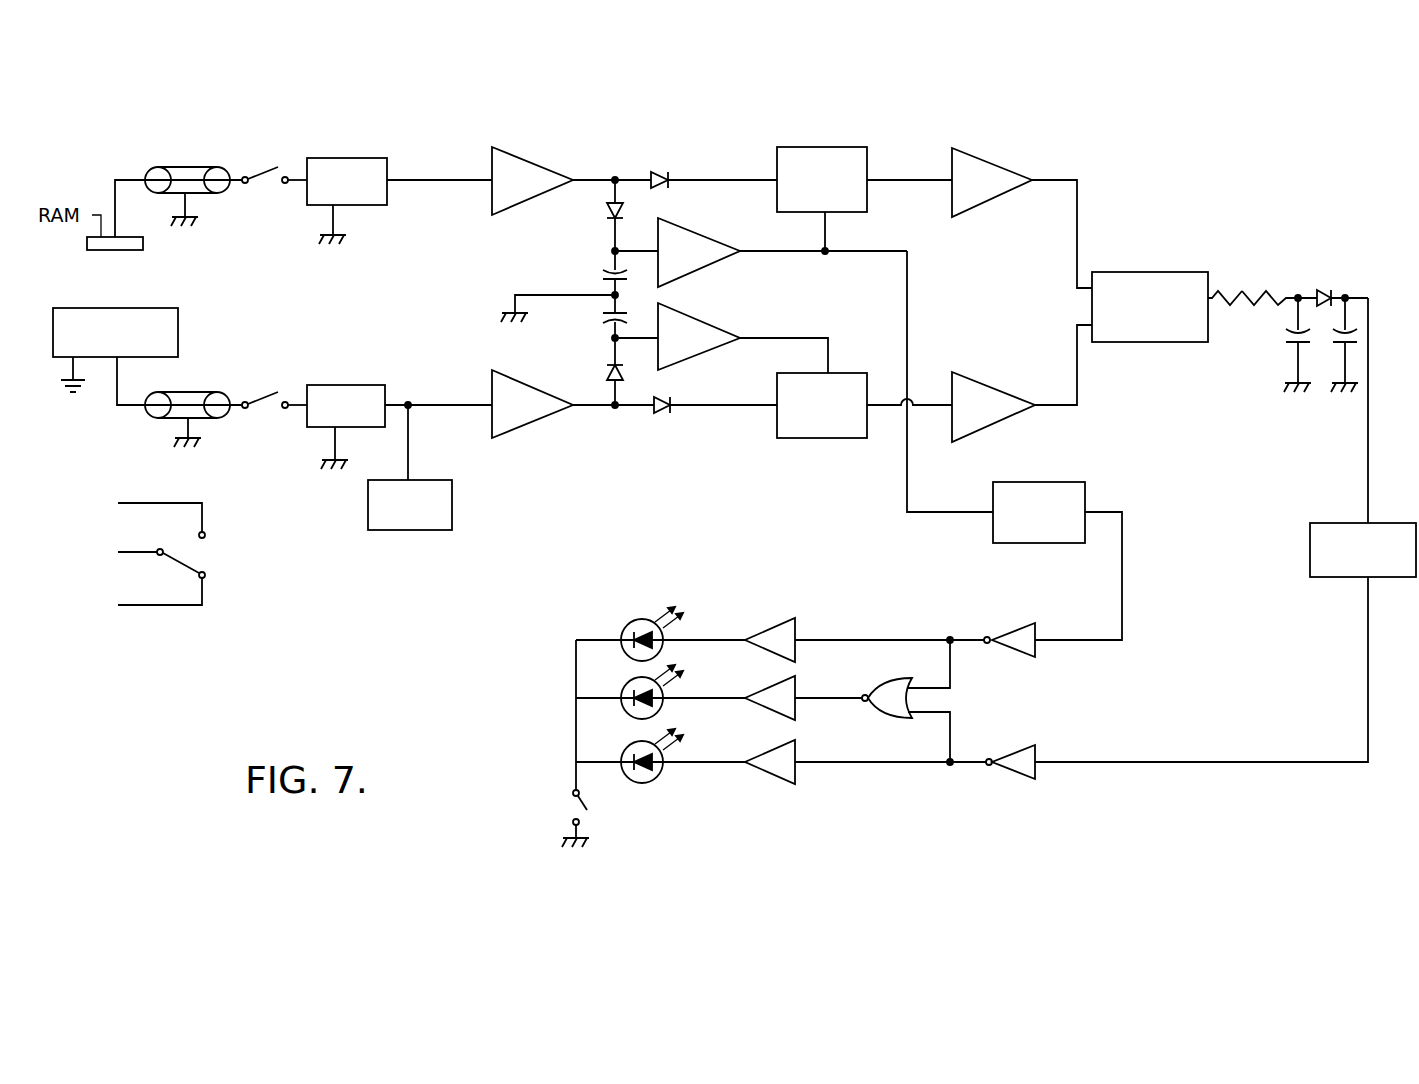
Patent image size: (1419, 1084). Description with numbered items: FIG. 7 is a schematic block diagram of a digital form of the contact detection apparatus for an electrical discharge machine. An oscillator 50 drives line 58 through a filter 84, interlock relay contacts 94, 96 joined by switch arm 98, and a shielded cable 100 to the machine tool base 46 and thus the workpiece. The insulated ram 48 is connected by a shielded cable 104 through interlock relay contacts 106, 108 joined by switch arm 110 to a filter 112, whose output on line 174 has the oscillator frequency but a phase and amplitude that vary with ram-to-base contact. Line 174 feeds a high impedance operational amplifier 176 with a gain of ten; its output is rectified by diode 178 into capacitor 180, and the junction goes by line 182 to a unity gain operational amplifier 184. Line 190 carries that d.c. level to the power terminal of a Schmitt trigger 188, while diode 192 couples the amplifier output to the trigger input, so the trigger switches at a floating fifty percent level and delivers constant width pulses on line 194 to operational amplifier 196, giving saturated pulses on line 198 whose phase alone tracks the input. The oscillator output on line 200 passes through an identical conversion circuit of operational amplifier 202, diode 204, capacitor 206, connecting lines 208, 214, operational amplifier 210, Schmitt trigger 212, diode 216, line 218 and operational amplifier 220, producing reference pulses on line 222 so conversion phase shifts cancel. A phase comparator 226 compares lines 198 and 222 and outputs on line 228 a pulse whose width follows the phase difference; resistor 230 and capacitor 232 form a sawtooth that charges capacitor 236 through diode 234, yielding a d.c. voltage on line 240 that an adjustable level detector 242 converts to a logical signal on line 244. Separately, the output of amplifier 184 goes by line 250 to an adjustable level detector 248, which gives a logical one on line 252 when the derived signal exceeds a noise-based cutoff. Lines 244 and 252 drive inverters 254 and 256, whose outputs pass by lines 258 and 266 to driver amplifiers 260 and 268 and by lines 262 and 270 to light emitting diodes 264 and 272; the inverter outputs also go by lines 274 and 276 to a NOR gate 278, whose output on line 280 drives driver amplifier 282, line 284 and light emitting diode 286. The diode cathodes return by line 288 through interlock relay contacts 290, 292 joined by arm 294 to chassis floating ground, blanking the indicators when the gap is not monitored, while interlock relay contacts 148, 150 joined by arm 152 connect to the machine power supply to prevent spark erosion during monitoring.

The machine tool base 46 is at (107, 308).
The machine tool ram 48 is at (143, 243).
The oscillator 50 is at (452, 510).
The oscillator output line 58 is at (413, 440).
The filter 84 is at (356, 385).
The interlock relay contact 94 is at (287, 400).
The interlock relay contact 96 is at (243, 409).
The switch arm 98 is at (265, 396).
The shielded cable 100 is at (165, 418).
The shielded cable 104 is at (193, 175).
The interlock relay contact 106 is at (243, 184).
The interlock relay contact 108 is at (286, 177).
The switch arm 110 is at (264, 167).
The filter 112 is at (372, 158).
The interlock relay contact 148 is at (208, 533).
The interlock relay contact 150 is at (208, 577).
The arm 152 is at (185, 562).
The line 174 is at (432, 178).
The operational amplifier 176 is at (522, 158).
The diode 178 is at (605, 212).
The capacitor 180 is at (608, 273).
The line 182 is at (628, 251).
The operational amplifier 184 is at (693, 232).
The Schmitt trigger circuit 188 is at (828, 147).
The line 190 is at (823, 234).
The diode 192 is at (660, 171).
The line 194 is at (905, 178).
The operational amplifier 196 is at (995, 198).
The line 198 is at (1077, 203).
The line 200 is at (460, 403).
The operational amplifier 202 is at (537, 421).
The diode 204 is at (604, 373).
The capacitor 206 is at (608, 322).
The junction line 208 is at (637, 338).
The operational amplifier 210 is at (706, 322).
The Schmitt trigger 212 is at (828, 440).
The amplifier output line 214 is at (831, 372).
The diode 216 is at (664, 412).
The line 218 is at (935, 408).
The operational amplifier 220 is at (988, 386).
The line 222 is at (1080, 383).
The phase comparator 226 is at (1157, 272).
The line 228 is at (1215, 295).
The resistor 230 is at (1257, 296).
The capacitor 232 is at (1290, 333).
The diode 234 is at (1327, 290).
The capacitor 236 is at (1340, 345).
The line 240 is at (1368, 470).
The adjustable level detector 242 is at (1322, 523).
The line 244 is at (1368, 668).
The adjustable level detector 248 is at (1073, 482).
The line 250 is at (942, 514).
The line 252 is at (1122, 585).
The inverter 254 is at (1022, 780).
The inverter 256 is at (1024, 623).
The line 258 is at (925, 765).
The driver amplifier 260 is at (797, 780).
The line 262 is at (723, 766).
The light emitting diode 264 is at (625, 752).
The line 266 is at (907, 638).
The driver amplifier 268 is at (796, 626).
The line 270 is at (727, 638).
The light emitting diode 272 is at (636, 620).
The line 274 is at (950, 735).
The line 276 is at (950, 667).
The NOR gate 278 is at (906, 678).
The line 280 is at (860, 702).
The driver amplifier 282 is at (797, 695).
The line 284 is at (726, 698).
The light emitting diode 286 is at (625, 690).
The line 288 is at (576, 684).
The interlock relay contact 290 is at (573, 790).
The interlock relay contact 292 is at (571, 822).
The arm 294 is at (588, 810).